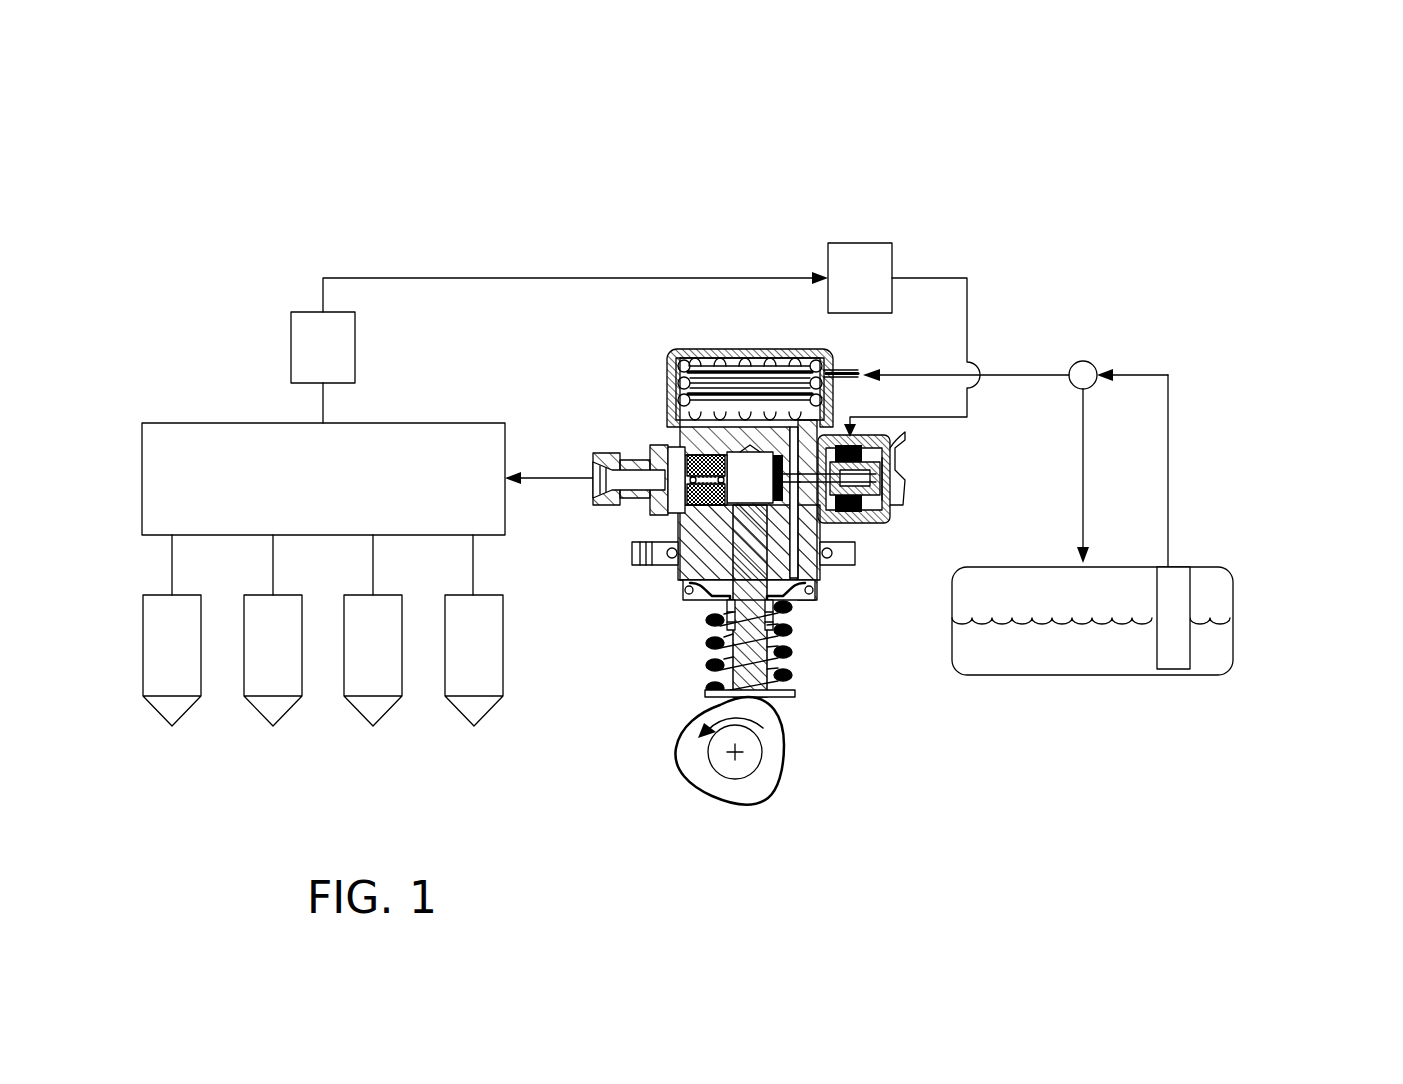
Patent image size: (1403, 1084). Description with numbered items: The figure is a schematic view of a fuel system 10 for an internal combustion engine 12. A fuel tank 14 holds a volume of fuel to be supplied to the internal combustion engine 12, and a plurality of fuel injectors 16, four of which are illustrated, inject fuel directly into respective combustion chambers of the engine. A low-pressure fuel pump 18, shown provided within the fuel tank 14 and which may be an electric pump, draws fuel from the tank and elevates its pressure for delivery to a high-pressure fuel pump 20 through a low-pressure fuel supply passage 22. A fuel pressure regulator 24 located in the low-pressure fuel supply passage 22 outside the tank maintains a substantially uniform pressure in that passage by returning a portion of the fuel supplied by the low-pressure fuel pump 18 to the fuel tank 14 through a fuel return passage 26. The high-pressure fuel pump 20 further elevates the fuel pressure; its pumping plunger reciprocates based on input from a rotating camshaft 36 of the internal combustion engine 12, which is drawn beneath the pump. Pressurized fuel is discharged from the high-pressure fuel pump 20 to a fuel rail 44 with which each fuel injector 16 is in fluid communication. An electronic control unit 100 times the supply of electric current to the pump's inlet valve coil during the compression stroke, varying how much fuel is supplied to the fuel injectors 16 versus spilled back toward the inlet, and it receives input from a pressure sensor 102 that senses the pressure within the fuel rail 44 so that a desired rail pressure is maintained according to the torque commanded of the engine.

The fuel system 10 is at (1268, 133).
The internal combustion engine 12 is at (323, 650).
The fuel tank 14 is at (1156, 656).
The fuel injectors 16 is at (155, 662).
The low-pressure fuel pump 18 is at (1172, 645).
The high-pressure fuel pump 20 is at (742, 577).
The low-pressure fuel supply passage 22 is at (1168, 471).
The fuel pressure regulator 24 is at (1086, 368).
The fuel return passage 26 is at (1080, 535).
The camshaft 36 is at (715, 707).
The fuel rail 44 is at (344, 494).
The electronic control unit 100 is at (836, 294).
The pressure sensor 102 is at (299, 363).